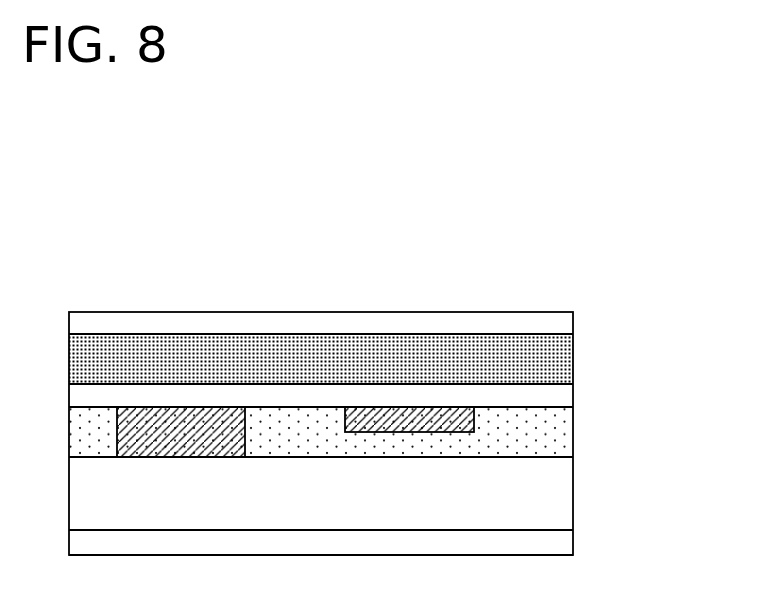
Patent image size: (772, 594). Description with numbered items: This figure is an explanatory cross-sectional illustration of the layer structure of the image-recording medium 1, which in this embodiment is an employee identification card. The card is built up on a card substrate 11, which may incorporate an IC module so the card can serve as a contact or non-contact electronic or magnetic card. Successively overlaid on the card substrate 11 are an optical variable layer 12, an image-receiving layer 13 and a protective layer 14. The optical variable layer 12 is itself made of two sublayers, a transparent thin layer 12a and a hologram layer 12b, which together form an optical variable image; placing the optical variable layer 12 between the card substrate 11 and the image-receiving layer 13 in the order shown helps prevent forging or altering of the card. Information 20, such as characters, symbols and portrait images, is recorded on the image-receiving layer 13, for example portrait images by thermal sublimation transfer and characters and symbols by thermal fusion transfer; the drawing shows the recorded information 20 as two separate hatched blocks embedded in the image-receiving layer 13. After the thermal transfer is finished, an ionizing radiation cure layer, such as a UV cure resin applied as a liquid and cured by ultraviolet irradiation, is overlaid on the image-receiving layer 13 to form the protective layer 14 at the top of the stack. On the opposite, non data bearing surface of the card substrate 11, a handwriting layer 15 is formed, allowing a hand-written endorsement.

The image-recording medium 1 is at (304, 294).
The card substrate 11 is at (560, 496).
The optical variable layer 12 is at (405, 374).
The transparent thin layer 12a is at (560, 392).
The hologram layer 12b is at (572, 352).
The image-receiving layer 13 is at (560, 437).
The protective layer 14 is at (121, 324).
The handwriting layer 15 is at (560, 543).
The information 20 is at (210, 413).